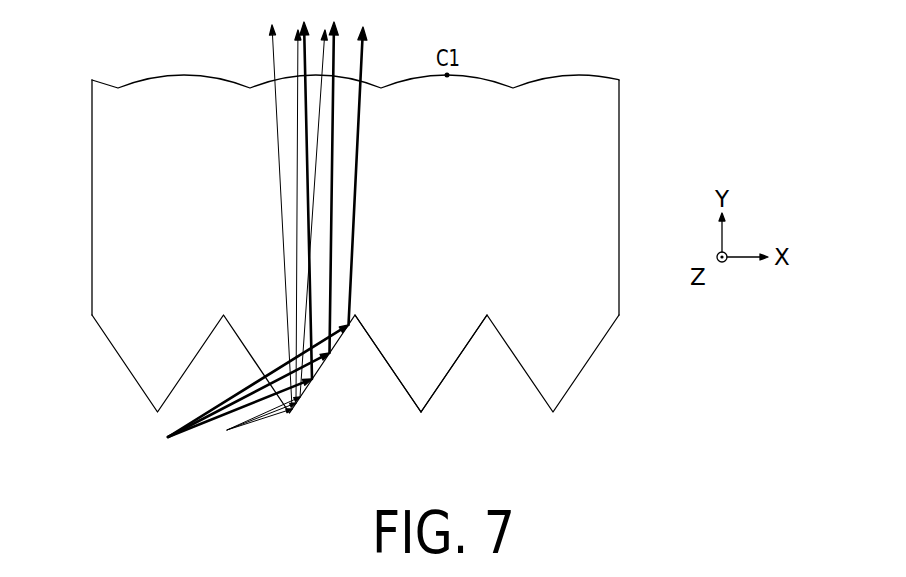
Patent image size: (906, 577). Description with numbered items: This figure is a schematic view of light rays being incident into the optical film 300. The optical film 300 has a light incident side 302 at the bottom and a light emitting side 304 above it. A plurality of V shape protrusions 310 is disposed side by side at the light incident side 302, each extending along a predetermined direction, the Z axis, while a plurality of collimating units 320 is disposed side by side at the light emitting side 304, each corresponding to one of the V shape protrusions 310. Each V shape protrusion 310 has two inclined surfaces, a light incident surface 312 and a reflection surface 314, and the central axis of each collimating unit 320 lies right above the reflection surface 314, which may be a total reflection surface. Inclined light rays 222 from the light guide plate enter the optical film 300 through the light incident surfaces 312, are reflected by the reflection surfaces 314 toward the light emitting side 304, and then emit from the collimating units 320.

The optical film 300 is at (408, 247).
The light incident side 302 is at (408, 402).
The light emitting side 304 is at (399, 46).
The V shape protrusion 310 is at (447, 352).
The light incident surface 312 is at (407, 393).
The reflection surface 314 is at (445, 380).
The collimating unit 320 is at (497, 85).
The light rays 222 is at (197, 428).